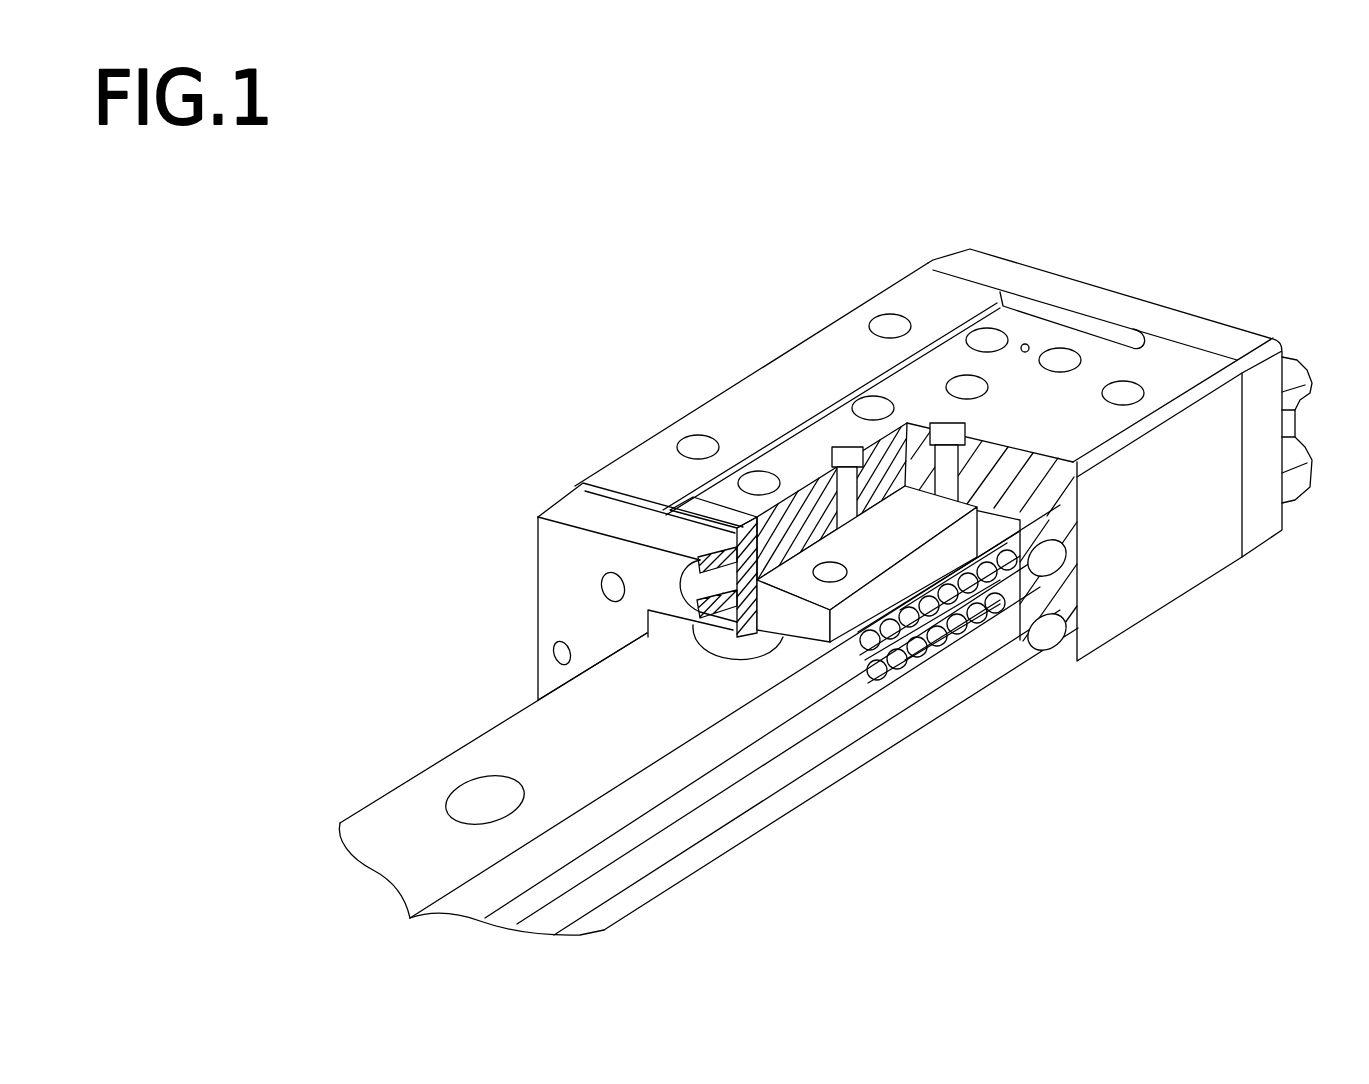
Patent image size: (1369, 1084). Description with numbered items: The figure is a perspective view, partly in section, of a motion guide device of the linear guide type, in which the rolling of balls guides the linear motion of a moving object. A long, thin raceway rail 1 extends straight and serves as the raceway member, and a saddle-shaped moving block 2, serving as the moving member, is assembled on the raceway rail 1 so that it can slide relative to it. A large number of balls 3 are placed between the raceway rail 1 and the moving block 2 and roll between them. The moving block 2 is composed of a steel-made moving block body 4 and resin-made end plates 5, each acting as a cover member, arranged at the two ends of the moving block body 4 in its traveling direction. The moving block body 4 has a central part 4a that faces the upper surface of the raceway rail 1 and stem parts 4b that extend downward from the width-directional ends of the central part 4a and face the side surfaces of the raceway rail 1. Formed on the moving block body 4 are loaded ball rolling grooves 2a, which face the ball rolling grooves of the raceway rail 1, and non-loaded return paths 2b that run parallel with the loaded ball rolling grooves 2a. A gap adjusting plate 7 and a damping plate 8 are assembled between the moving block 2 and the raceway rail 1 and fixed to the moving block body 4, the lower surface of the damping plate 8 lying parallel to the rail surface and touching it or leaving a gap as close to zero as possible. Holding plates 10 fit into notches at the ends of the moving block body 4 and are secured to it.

The raceway rail 1 is at (757, 800).
The moving block 2 is at (817, 357).
The loaded ball rolling groove 2a is at (997, 630).
The non-loaded return path 2b is at (1078, 585).
The ball 3 is at (928, 640).
The moving block body 4 is at (765, 393).
The central part 4a is at (1010, 363).
The stem part 4b is at (722, 415).
The end plate 5 is at (566, 512).
The gap adjusting plate 7 is at (957, 632).
The damping plate 8 is at (833, 658).
The holding plate 10 is at (683, 487).